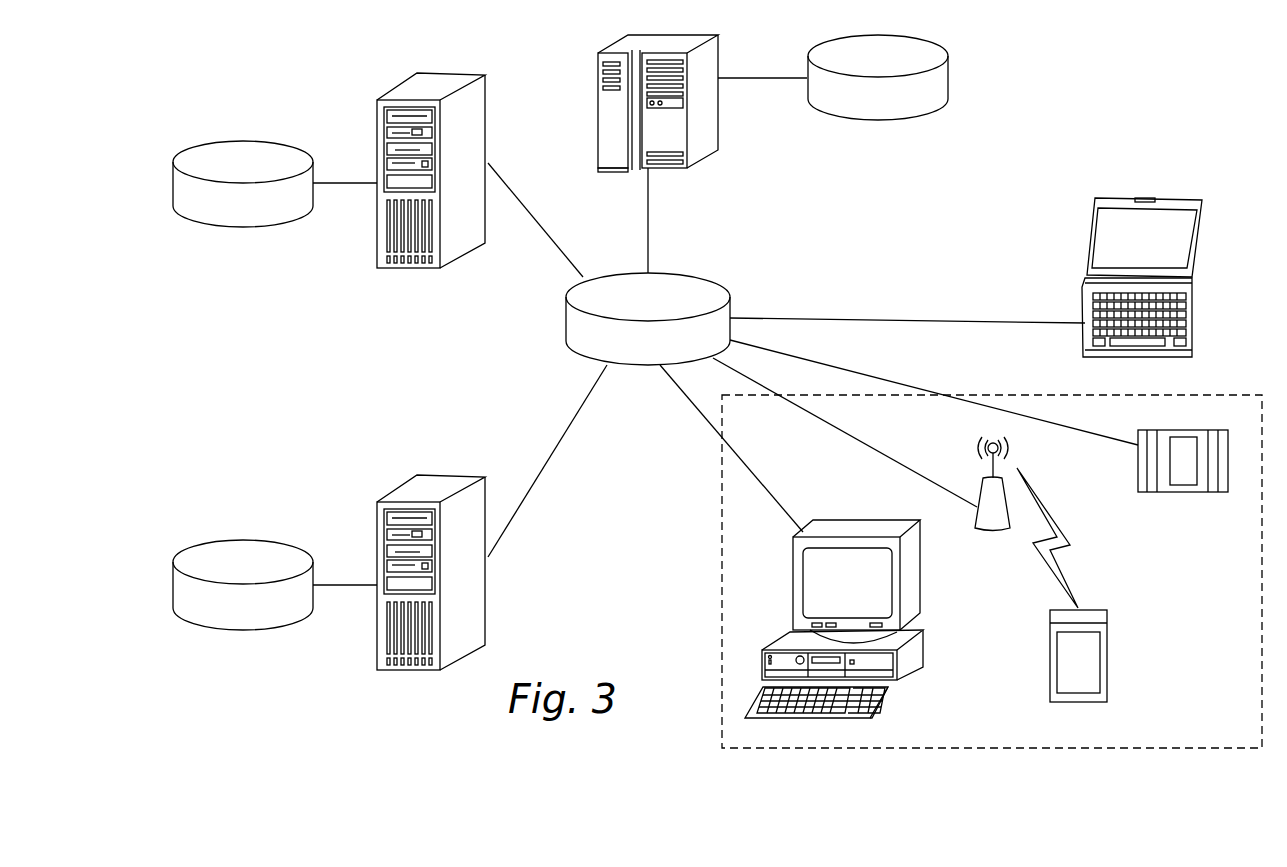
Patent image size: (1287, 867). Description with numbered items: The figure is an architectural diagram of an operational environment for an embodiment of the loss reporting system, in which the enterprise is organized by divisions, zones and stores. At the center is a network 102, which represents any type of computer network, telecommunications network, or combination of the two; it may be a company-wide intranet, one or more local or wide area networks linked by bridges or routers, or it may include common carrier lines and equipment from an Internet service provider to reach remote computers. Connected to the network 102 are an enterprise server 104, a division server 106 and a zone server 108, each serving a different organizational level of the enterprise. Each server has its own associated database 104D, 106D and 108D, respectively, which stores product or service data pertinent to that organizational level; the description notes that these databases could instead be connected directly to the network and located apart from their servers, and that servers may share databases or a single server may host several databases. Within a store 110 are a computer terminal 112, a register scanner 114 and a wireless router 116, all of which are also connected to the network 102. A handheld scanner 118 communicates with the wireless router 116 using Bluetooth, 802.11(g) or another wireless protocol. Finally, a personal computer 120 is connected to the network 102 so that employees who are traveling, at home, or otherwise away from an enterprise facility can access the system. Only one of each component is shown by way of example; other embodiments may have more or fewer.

The network 102 is at (567, 322).
The enterprise server 104 is at (598, 108).
The database 104D is at (893, 120).
The division server 106 is at (377, 148).
The database 106D is at (242, 227).
The zone server 108 is at (377, 540).
The database 108D is at (262, 541).
The store 110 is at (1215, 395).
The computer terminal 112 is at (912, 653).
The register scanner 114 is at (1182, 492).
The wireless router 116 is at (1000, 530).
The handheld scanner 118 is at (1107, 662).
The personal computer 120 is at (1088, 233).